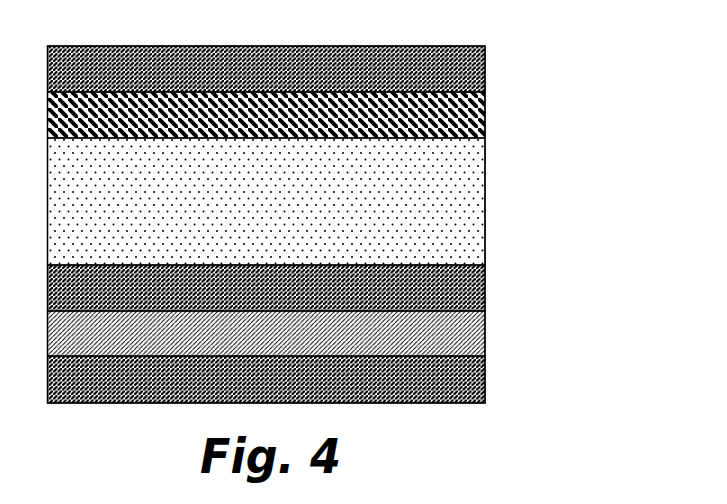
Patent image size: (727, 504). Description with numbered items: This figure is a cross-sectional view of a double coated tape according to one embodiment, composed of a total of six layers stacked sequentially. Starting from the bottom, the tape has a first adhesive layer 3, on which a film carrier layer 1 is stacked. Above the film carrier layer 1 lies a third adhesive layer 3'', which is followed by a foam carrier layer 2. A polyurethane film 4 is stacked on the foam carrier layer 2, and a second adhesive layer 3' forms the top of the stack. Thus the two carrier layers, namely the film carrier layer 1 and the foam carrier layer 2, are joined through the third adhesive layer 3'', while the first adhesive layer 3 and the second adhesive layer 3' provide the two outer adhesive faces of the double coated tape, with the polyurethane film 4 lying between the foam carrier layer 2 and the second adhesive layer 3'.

The second adhesive layer 3' is at (333, 69).
The polyurethane film 4 is at (477, 107).
The foam carrier layer 2 is at (477, 195).
The third adhesive layer 3'' is at (336, 288).
The film carrier layer 1 is at (477, 325).
The first adhesive layer 3 is at (329, 379).